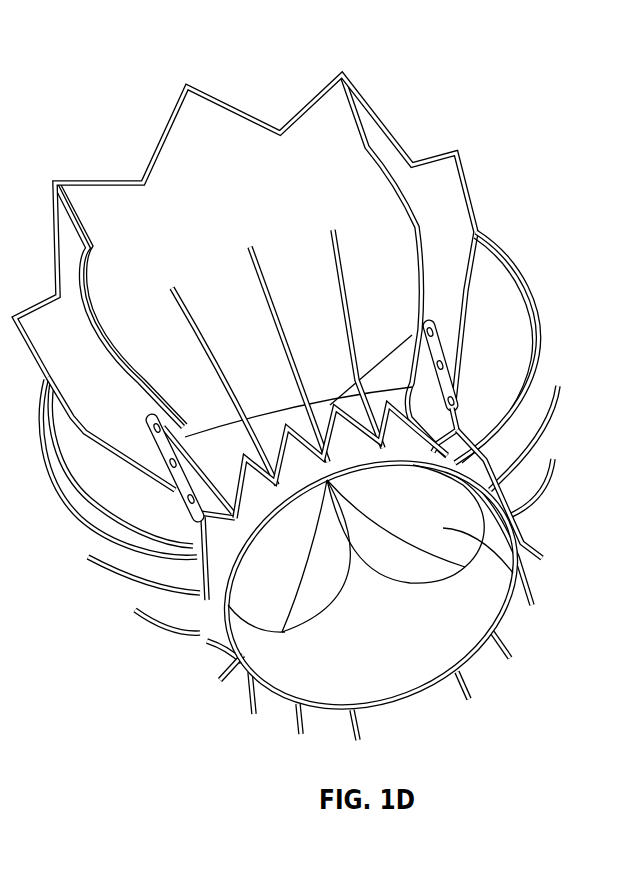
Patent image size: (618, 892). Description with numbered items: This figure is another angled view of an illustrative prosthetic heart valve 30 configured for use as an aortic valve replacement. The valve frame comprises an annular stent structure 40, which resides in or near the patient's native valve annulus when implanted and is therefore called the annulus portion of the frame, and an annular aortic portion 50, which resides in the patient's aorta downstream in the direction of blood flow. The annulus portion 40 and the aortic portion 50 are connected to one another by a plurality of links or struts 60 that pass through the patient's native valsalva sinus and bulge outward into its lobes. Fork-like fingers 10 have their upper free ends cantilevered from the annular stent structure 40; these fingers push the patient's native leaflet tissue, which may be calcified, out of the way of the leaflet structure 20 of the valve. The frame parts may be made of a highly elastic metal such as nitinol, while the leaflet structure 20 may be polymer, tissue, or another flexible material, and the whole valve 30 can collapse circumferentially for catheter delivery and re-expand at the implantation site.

The prosthetic heart valve 30 is at (101, 72).
The annular aortic portion 50 is at (359, 117).
The links or struts 60 is at (534, 362).
The annular stent structure 40 is at (195, 530).
The fork-like fingers 10 is at (257, 261).
The leaflet structure 20 is at (518, 575).